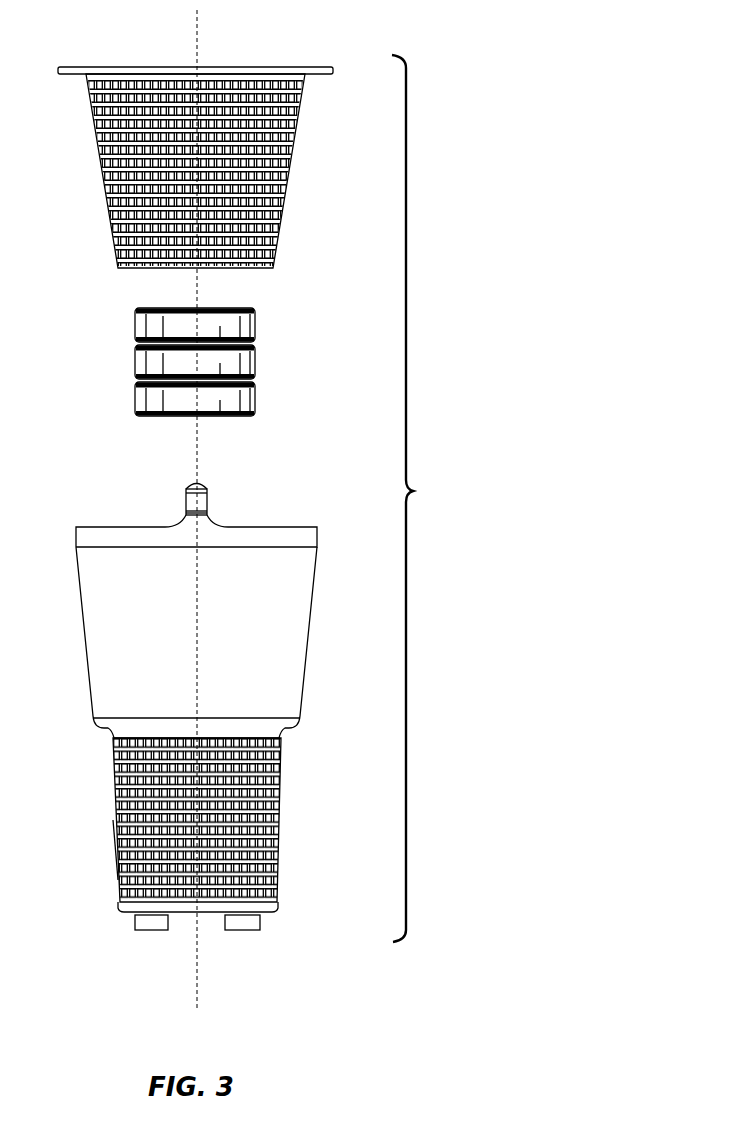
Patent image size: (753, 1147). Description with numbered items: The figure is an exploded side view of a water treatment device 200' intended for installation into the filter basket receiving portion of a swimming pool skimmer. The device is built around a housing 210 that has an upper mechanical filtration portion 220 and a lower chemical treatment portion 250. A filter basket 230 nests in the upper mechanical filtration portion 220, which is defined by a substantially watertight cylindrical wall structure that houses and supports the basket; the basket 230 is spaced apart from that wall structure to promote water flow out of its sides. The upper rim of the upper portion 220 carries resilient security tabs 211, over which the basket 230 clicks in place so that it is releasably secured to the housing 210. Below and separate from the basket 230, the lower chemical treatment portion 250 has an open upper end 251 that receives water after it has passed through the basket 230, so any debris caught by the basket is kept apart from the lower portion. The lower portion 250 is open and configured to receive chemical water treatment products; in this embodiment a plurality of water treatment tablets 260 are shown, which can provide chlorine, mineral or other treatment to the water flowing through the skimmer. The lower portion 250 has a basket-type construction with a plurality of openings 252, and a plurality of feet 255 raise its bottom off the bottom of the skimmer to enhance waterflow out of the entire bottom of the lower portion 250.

The water treatment device 200' is at (429, 498).
The filter basket 230 is at (287, 173).
The water treatment tablets 260 is at (257, 397).
The security tabs 211 is at (201, 483).
The housing 210 is at (263, 527).
The upper mechanical filtration portion 220 is at (312, 622).
The lower chemical treatment portion 250 is at (282, 818).
The upper end 251 is at (282, 742).
The openings 252 is at (128, 862).
The feet 255 is at (150, 931).